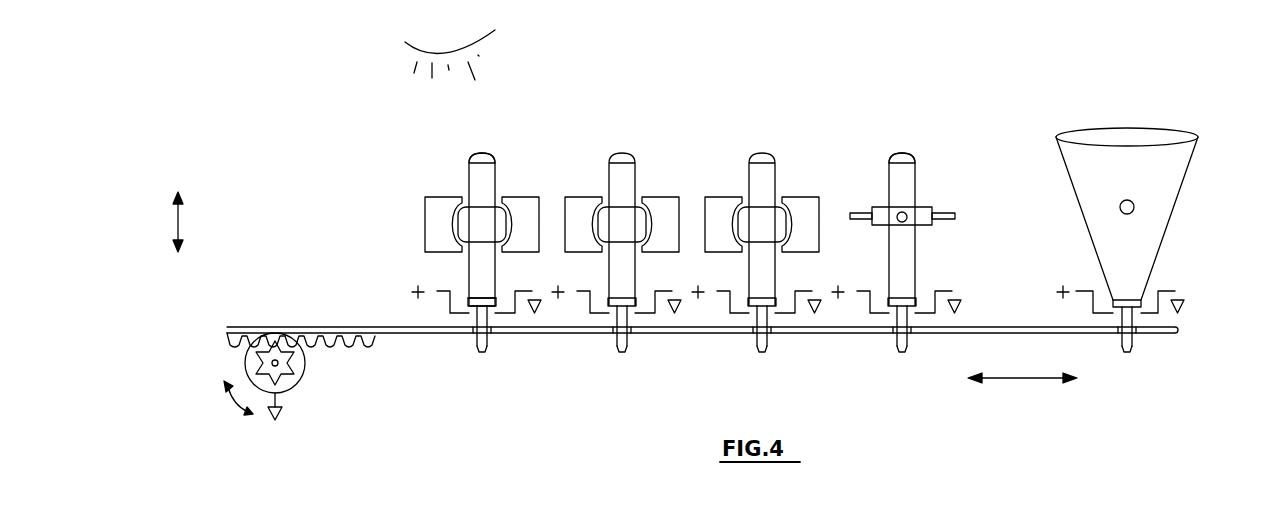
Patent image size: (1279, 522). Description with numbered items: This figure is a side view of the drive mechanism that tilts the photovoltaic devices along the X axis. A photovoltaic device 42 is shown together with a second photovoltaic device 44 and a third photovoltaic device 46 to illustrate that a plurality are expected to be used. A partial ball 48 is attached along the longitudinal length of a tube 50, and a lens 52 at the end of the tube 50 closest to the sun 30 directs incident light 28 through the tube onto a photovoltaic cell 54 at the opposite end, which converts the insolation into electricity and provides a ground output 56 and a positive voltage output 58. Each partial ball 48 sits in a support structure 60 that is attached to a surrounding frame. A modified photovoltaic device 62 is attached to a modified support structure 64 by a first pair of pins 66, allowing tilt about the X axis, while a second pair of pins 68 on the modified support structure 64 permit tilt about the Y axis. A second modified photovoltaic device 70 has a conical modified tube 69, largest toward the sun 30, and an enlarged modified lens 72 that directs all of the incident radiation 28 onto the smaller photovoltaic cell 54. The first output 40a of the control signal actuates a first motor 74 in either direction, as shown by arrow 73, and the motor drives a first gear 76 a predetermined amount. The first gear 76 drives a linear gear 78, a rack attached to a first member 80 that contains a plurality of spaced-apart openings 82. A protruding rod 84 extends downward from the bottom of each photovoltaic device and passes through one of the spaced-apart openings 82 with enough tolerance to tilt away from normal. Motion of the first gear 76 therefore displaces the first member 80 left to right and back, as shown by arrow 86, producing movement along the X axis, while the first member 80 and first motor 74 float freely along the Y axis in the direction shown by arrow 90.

The incident light 28 is at (490, 56).
The sun 30 is at (408, 45).
The first output 40a is at (225, 371).
The photovoltaic device 42 is at (450, 222).
The second photovoltaic device 44 is at (610, 162).
The third photovoltaic device 46 is at (750, 162).
The partial ball 48 is at (482, 225).
The tube 50 is at (474, 192).
The lens 52 is at (485, 152).
The photovoltaic cell 54 is at (477, 298).
The ground output 56 is at (540, 316).
The positive voltage output 58 is at (440, 291).
The support structure 60 is at (424, 222).
The modified photovoltaic device 62 is at (917, 190).
The modified support structure 64 is at (925, 226).
The first pair of pins 66 is at (900, 222).
The second pair of pins 68 is at (862, 212).
The modified tube 69 is at (1155, 225).
The second modified photovoltaic device 70 is at (1124, 193).
The modified lens 72 is at (1112, 130).
The arrow 73 is at (243, 400).
The first motor 74 is at (299, 386).
The first gear 76 is at (305, 366).
The linear gear 78 is at (366, 343).
The first member 80 is at (441, 334).
The spaced-apart openings 82 is at (489, 334).
The protruding rod 84 is at (485, 353).
The arrow 86 is at (1015, 379).
The arrow 90 is at (176, 222).